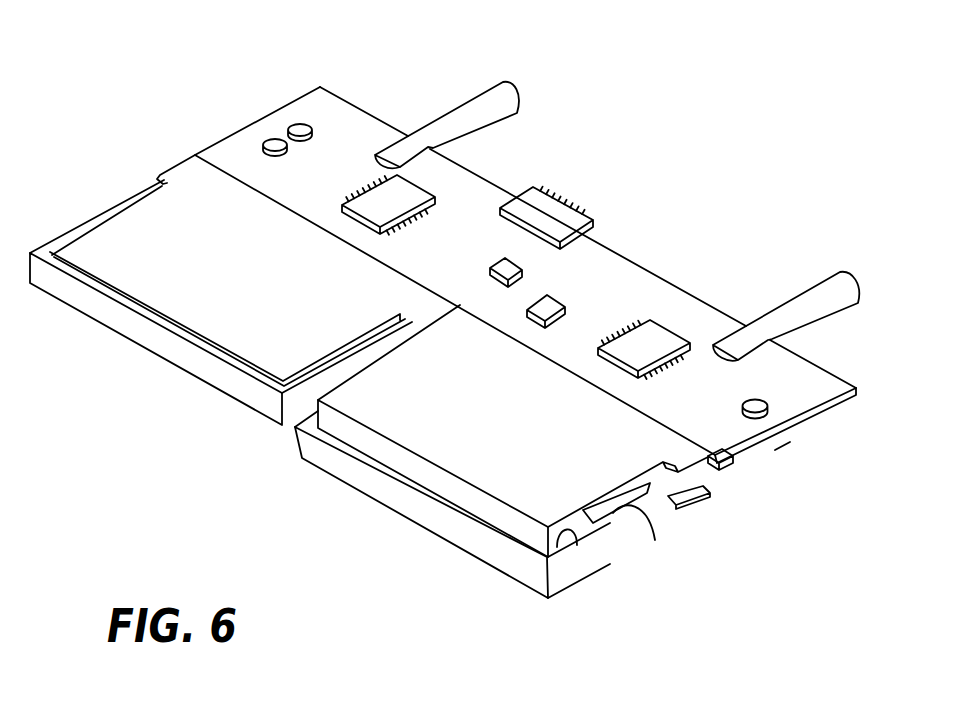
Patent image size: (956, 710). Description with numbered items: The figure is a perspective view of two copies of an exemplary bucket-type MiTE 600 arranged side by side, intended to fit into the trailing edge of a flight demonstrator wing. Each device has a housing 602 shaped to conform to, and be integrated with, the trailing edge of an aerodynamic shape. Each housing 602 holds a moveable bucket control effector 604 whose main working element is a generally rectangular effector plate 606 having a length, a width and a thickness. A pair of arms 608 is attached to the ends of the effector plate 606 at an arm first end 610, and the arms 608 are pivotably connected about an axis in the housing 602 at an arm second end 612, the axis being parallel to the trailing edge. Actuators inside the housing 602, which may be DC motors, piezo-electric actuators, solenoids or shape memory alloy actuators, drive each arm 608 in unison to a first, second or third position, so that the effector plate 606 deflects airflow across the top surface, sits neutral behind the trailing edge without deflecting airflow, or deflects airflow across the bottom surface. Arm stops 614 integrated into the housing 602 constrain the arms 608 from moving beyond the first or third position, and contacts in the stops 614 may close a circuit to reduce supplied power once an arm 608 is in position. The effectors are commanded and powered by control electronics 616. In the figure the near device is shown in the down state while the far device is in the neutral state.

The bucket-type MiTE 600 is at (93, 69).
The housing 602 is at (596, 512).
The moveable bucket control effector 604 is at (130, 368).
The effector plate 606 is at (362, 492).
The arms 608 is at (598, 560).
The arm first end 610 is at (548, 600).
The arm second end 612 is at (707, 468).
The arm stops 614 is at (775, 450).
The control electronics 616 is at (627, 258).